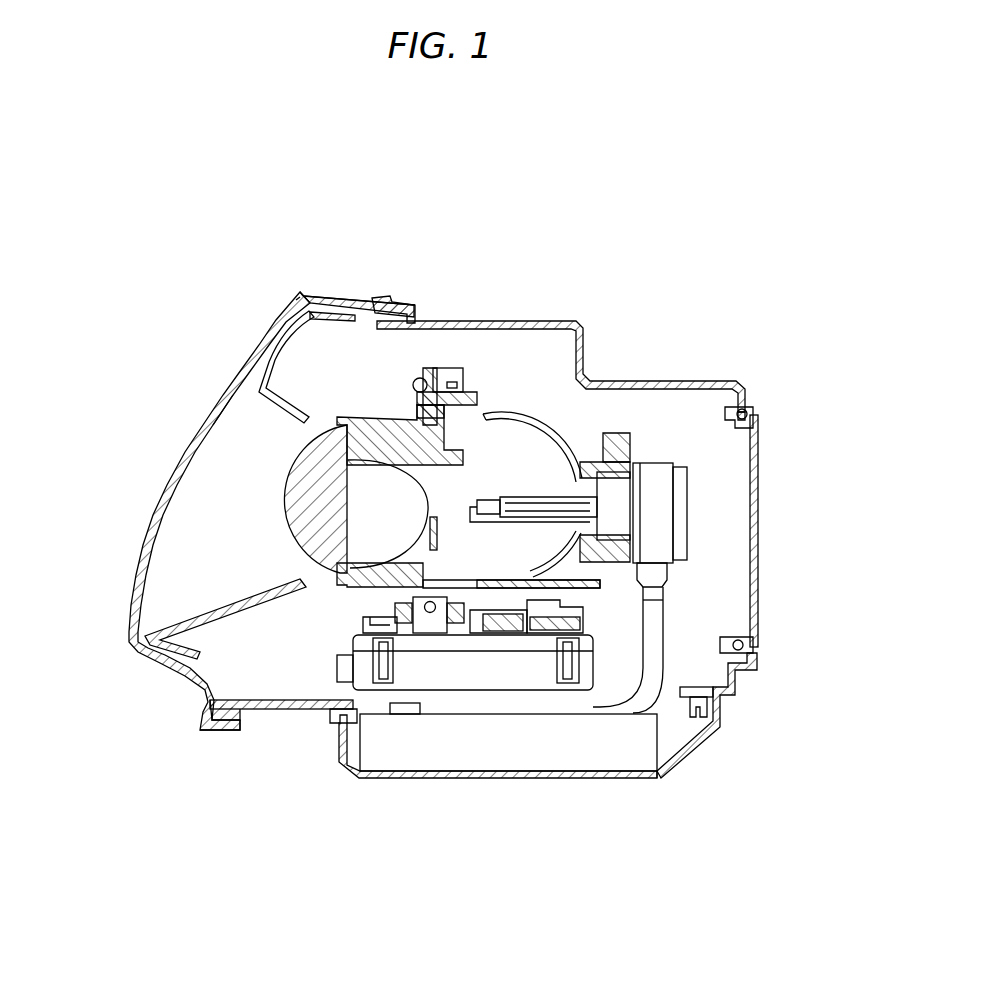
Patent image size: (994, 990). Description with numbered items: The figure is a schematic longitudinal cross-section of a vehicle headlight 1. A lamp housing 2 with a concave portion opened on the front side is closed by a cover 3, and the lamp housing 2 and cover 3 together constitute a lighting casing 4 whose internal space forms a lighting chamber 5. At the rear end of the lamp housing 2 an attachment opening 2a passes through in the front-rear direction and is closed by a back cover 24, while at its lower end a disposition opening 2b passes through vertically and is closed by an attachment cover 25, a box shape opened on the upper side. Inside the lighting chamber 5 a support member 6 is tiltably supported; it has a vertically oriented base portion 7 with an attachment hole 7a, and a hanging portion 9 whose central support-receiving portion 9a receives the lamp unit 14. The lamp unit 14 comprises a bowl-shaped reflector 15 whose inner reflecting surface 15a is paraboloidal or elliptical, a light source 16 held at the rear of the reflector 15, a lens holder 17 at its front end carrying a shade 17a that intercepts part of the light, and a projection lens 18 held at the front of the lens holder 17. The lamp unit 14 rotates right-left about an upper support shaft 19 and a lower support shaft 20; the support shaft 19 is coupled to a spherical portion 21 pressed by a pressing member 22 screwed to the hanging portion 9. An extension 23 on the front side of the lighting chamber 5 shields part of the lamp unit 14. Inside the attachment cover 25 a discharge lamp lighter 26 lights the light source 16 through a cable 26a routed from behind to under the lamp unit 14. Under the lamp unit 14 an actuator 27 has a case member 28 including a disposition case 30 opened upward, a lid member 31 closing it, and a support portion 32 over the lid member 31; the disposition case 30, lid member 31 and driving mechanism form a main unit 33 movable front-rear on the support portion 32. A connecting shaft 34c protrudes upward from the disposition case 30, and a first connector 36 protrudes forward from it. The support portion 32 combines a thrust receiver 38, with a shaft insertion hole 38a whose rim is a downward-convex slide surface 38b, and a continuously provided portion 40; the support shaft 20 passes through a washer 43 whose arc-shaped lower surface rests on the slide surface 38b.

The vehicle headlight 1 is at (735, 182).
The lamp housing 2 is at (415, 296).
The attachment opening 2a is at (760, 443).
The disposition opening 2b is at (333, 718).
The cover 3 is at (332, 296).
The lighting casing 4 is at (389, 215).
The lighting chamber 5 is at (230, 539).
The support member 6 is at (565, 603).
The base portion 7 is at (753, 632).
The attachment hole 7a is at (560, 583).
The hanging portion 9 is at (522, 400).
The support-receiving portion 9a is at (460, 372).
The lamp unit 14 is at (553, 495).
The reflector 15 is at (590, 425).
The reflecting surface 15a is at (615, 430).
The light source 16 is at (742, 405).
The lens holder 17 is at (300, 343).
The shade 17a is at (345, 457).
The projection lens 18 is at (300, 478).
The support shaft 19 is at (447, 366).
The support shaft 20 is at (395, 597).
The spherical portion 21 is at (430, 365).
The pressing member 22 is at (486, 410).
The extension 23 is at (262, 612).
The back cover 24 is at (760, 540).
The attachment cover 25 is at (440, 682).
The discharge lamp lighter 26 is at (587, 758).
The cable 26a is at (663, 645).
The actuator 27 is at (455, 660).
The case member 28 is at (462, 680).
The disposition case 30 is at (515, 635).
The lid member 31 is at (600, 760).
The support portion 32 is at (500, 630).
The main unit 33 is at (618, 775).
The connecting shaft 34c is at (425, 635).
The first connector 36 is at (320, 708).
The thrust receiver 38 is at (410, 612).
The shaft insertion hole 38a is at (470, 625).
The slide surface 38b is at (478, 630).
The continuously provided portion 40 is at (540, 640).
The washer 43 is at (400, 603).